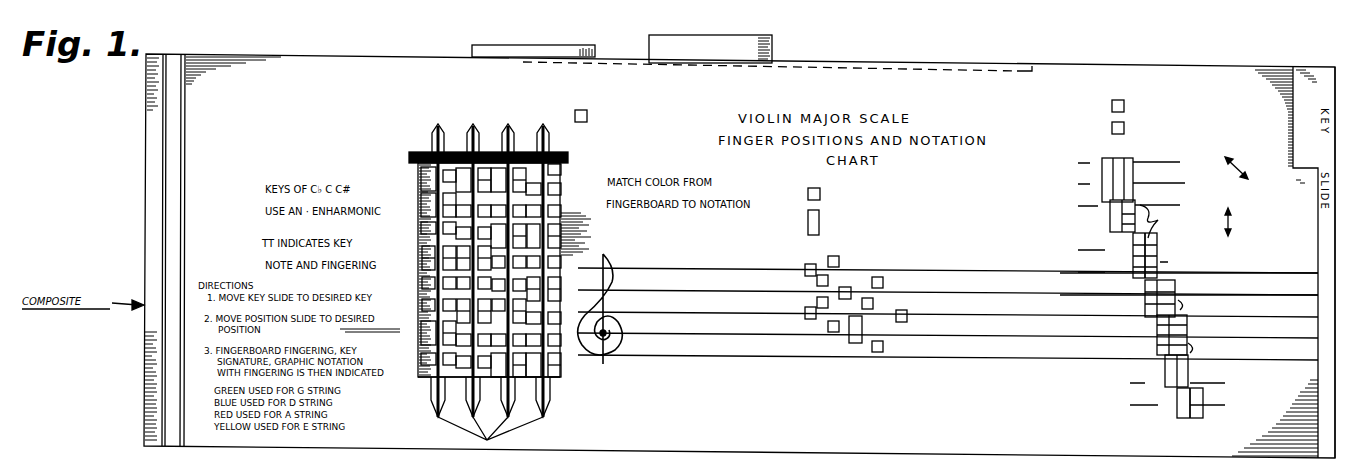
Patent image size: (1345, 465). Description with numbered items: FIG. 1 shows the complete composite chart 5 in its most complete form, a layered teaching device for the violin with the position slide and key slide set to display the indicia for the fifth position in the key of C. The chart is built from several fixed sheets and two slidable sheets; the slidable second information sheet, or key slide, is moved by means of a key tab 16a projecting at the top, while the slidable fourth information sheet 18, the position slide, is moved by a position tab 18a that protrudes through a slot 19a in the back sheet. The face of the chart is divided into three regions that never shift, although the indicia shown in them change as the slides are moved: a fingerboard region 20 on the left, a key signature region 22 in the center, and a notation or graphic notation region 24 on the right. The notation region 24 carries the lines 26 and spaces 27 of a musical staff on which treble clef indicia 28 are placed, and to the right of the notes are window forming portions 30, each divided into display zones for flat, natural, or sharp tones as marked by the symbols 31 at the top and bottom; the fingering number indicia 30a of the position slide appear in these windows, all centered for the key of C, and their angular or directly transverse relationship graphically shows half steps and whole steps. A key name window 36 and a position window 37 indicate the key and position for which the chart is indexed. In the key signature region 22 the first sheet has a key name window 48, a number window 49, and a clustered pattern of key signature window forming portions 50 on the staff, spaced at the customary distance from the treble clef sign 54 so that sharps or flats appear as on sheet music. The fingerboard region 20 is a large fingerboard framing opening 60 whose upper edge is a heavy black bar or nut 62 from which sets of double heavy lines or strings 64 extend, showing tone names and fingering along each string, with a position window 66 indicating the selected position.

The violin major scale finger position and notation chart 5 is at (1052, 87).
The key tab 16a is at (595, 52).
The fourth information sheet 18 is at (144, 360).
The position tab 18a is at (772, 53).
The slot 19a is at (1014, 68).
The fingerboard region 20 is at (418, 136).
The key signature region 22 is at (932, 212).
The notation region 24 is at (1175, 118).
The lines 26 is at (1250, 280).
The spaces 27 is at (1189, 307).
The treble clef indicia 28 is at (1158, 422).
The window forming portions 30 is at (1203, 408).
The fingering number indicia 30a is at (1150, 240).
The symbols 31 is at (1100, 154).
The key name window 36 is at (1124, 100).
The position window 37 is at (1112, 128).
The key name window 48 is at (808, 193).
The number window 49 is at (807, 228).
The key signature window forming portions 50 is at (890, 285).
The treble clef sign 54 is at (604, 256).
The fingerboard framing opening 60 is at (560, 352).
The nut 62 is at (568, 157).
The strings 64 is at (432, 135).
The position window 66 is at (587, 112).